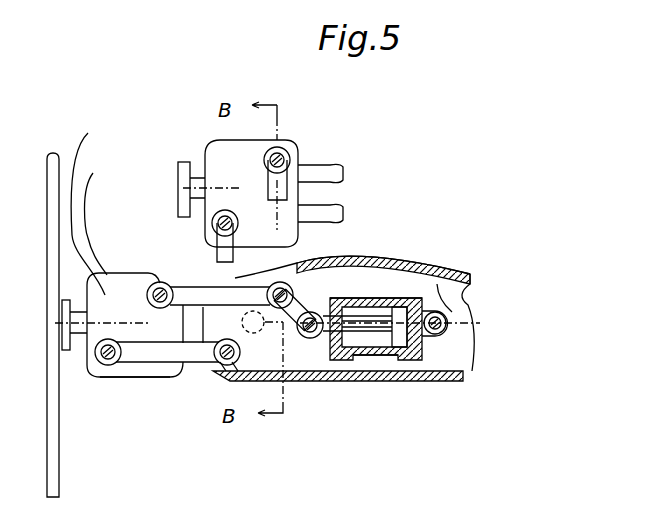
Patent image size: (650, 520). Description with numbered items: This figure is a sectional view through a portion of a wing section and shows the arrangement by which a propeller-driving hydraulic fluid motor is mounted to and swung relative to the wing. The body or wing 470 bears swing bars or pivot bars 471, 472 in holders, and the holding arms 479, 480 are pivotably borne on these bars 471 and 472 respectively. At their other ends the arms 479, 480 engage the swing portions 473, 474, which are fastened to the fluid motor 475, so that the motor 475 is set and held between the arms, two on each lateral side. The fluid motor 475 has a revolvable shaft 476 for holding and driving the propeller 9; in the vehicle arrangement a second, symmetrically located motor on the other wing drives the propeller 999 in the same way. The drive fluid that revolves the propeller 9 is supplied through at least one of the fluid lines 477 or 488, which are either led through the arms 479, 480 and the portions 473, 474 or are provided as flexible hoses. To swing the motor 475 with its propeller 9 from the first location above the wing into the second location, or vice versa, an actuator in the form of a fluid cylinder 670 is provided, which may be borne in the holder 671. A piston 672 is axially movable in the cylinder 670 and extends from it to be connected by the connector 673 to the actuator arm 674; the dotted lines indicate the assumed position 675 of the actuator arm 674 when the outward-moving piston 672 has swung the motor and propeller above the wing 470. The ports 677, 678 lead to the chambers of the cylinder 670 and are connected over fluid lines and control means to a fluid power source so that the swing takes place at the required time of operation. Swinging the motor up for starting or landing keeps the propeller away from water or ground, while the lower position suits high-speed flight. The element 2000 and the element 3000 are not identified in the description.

The propeller 9 is at (60, 478).
The microswitch 2000 is at (212, 168).
The fluid motor 475 is at (228, 185).
The propeller 999 is at (178, 178).
The holding arm 480 is at (195, 298).
The swing portion 473 is at (160, 283).
The revolvable shaft 476 is at (68, 352).
The swing portion 474 is at (113, 377).
The holding arm 479 is at (165, 355).
The pivot bar 472 is at (222, 365).
The fluid line 477 is at (319, 172).
The fluid line 488 is at (325, 213).
The pivot bar 471 is at (353, 305).
The connector 673 is at (393, 257).
The piston 672 is at (396, 258).
The fluid cylinder 670 is at (403, 258).
The wing 470 is at (410, 258).
The holder 671 is at (417, 258).
The fastening screw 3000 is at (433, 262).
The actuator arm 674 is at (253, 333).
The position 675 is at (299, 300).
The port 677 is at (363, 357).
The port 678 is at (407, 383).